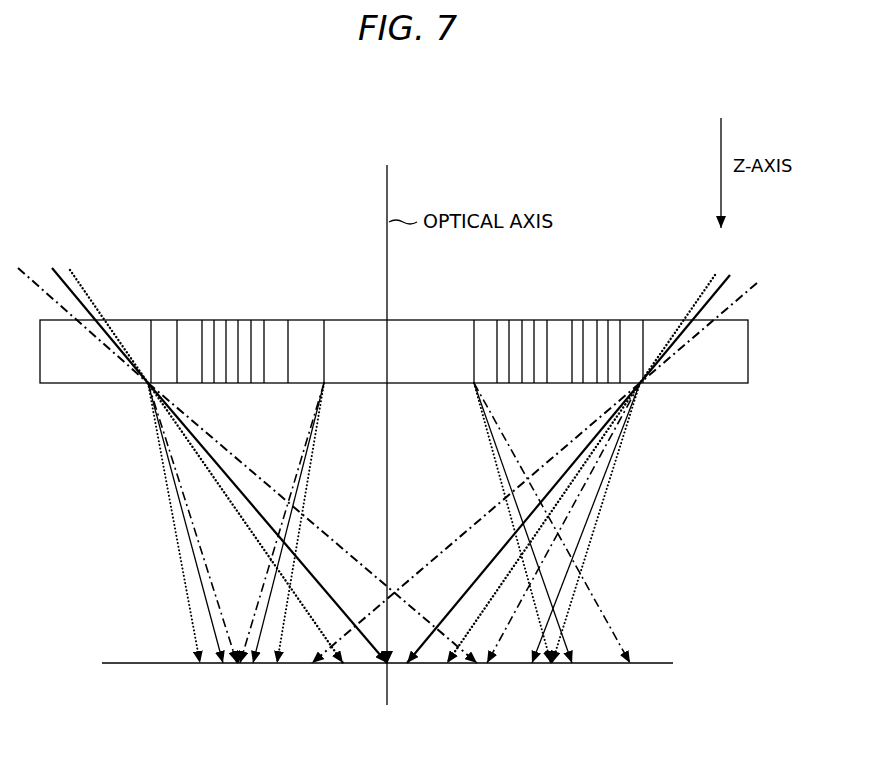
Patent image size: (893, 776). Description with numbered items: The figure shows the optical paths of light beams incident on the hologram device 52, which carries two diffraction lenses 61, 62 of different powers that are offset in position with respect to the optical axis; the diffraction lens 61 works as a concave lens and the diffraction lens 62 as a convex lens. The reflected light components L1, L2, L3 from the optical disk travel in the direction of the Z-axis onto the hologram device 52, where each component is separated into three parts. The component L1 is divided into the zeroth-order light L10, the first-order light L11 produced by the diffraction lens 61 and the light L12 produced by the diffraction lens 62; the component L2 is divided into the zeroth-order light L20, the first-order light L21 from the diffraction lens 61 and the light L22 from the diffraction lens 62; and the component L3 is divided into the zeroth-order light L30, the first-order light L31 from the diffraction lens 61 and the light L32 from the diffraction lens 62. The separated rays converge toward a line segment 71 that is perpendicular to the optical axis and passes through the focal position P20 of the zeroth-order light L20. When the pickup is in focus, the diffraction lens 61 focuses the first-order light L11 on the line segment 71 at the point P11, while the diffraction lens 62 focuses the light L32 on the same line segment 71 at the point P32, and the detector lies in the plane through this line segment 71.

The hologram device 52 is at (455, 318).
The diffraction lens 61 is at (241, 317).
The diffraction lens 62 is at (560, 317).
The line segment 71 is at (113, 660).
The reflected light component L1 is at (20, 273).
The reflected light component L2 is at (58, 272).
The reflected light component L3 is at (87, 293).
The zeroth-order light L10 is at (325, 650).
The zeroth-order light L20 is at (372, 647).
The zeroth-order light L30 is at (458, 647).
The first-order light L11 is at (249, 636).
The reflected light L12 is at (507, 627).
The first-order light L21 is at (215, 633).
The reflected light L22 is at (585, 548).
The first-order light L31 is at (283, 633).
The reflected light L32 is at (593, 520).
The convergence point of first beam diffracted light P11 is at (238, 668).
The focal position P20 is at (393, 670).
The convergence point of third beam diffracted light P32 is at (548, 667).